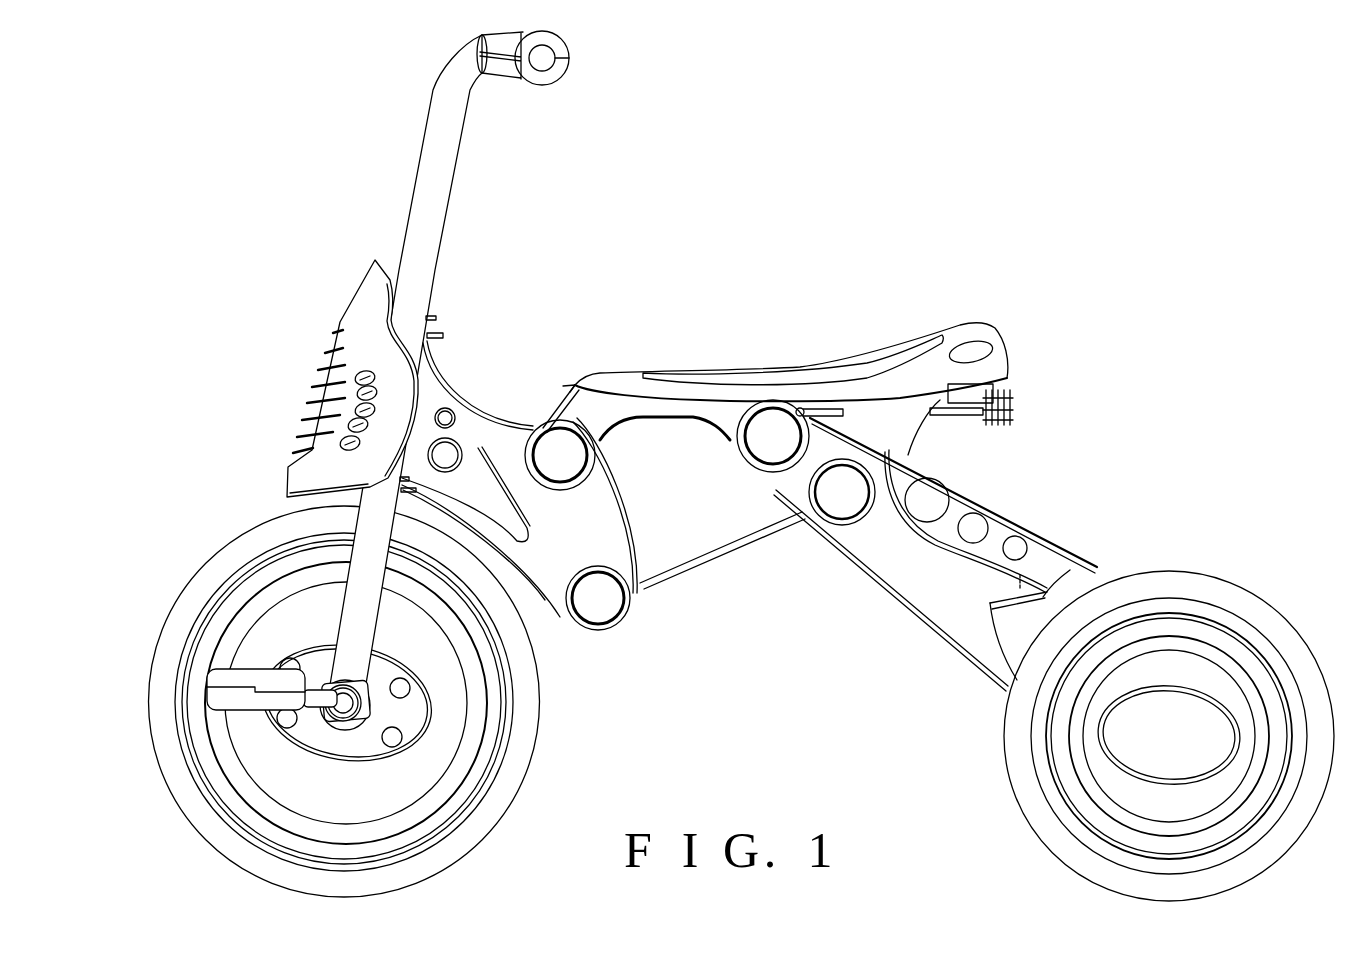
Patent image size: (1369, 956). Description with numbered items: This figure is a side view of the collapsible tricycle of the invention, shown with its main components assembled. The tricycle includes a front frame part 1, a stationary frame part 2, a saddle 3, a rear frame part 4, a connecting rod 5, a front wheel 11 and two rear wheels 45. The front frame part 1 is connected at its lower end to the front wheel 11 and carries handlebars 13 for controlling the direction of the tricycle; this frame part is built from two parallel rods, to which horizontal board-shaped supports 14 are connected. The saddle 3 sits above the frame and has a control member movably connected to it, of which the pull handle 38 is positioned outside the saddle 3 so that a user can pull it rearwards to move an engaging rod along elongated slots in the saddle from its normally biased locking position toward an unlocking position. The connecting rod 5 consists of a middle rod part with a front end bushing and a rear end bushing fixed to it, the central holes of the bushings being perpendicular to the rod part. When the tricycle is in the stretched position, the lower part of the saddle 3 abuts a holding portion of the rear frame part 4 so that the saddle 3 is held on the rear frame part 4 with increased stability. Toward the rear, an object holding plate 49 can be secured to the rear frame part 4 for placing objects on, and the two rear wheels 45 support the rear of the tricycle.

The front frame part 1 is at (358, 268).
The stationary frame part 2 is at (490, 405).
The saddle 3 is at (738, 362).
The rear frame part 4 is at (905, 637).
The connecting rod 5 is at (720, 573).
The front wheel 11 is at (475, 828).
The handlebars 13 is at (510, 73).
The horizontal board-shaped supports 14 is at (447, 318).
The pull handle 38 is at (1007, 427).
The rear wheels 45 is at (1192, 585).
The object holding plate 49 is at (1040, 605).